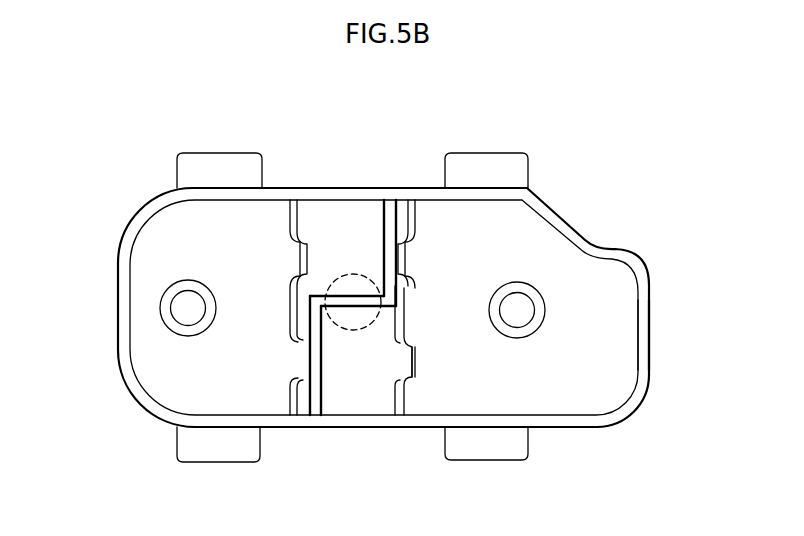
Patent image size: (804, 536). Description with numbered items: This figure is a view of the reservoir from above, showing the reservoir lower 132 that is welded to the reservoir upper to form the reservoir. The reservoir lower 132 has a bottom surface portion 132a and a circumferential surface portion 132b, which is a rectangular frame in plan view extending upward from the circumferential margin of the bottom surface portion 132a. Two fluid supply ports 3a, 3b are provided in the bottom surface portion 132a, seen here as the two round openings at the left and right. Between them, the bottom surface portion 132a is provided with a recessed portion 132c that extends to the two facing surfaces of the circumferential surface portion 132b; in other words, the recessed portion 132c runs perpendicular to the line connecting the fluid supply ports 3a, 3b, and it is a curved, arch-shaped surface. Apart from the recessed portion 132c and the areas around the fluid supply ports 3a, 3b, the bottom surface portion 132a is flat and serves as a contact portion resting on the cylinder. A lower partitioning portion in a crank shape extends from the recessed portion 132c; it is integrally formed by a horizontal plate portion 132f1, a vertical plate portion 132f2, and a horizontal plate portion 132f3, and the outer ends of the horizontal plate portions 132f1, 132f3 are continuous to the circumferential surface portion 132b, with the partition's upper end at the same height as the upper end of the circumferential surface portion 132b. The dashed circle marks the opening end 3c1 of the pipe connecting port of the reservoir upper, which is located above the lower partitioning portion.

The reservoir lower 132 is at (614, 136).
The bottom surface portion 132a is at (650, 327).
The circumferential surface portion 132b is at (607, 368).
The recessed portion 132c is at (372, 210).
The horizontal plate portion 132f1 is at (314, 370).
The vertical plate portion 132f2 is at (362, 298).
The horizontal plate portion 132f3 is at (392, 224).
The fluid supply port 3a is at (176, 302).
The fluid supply port 3b is at (500, 340).
The opening end 3c1 is at (340, 276).